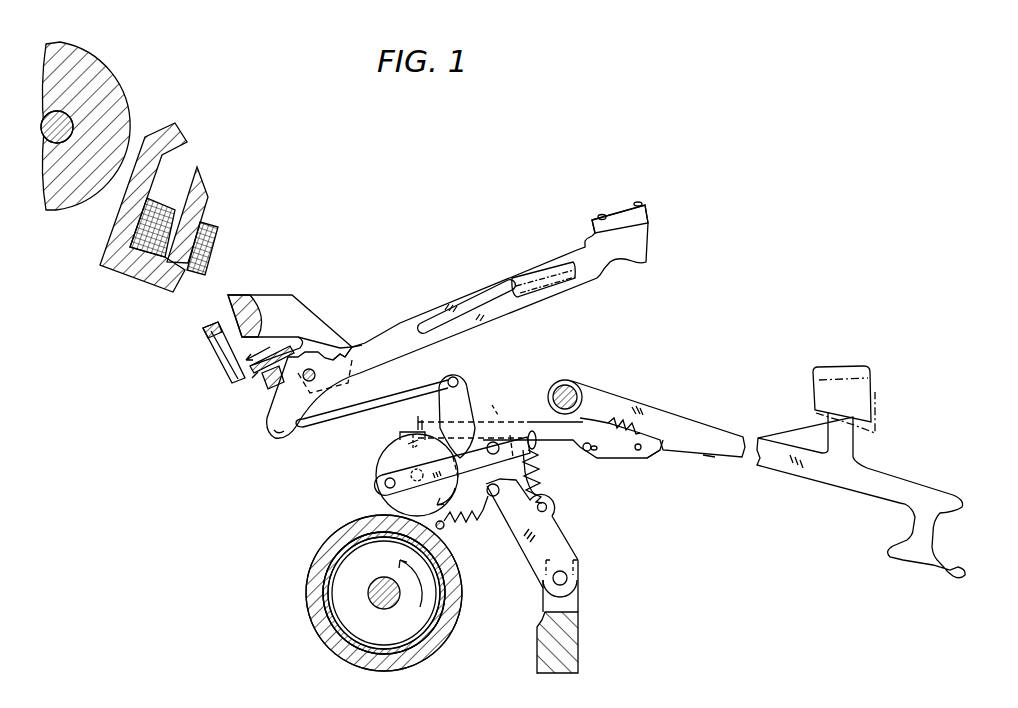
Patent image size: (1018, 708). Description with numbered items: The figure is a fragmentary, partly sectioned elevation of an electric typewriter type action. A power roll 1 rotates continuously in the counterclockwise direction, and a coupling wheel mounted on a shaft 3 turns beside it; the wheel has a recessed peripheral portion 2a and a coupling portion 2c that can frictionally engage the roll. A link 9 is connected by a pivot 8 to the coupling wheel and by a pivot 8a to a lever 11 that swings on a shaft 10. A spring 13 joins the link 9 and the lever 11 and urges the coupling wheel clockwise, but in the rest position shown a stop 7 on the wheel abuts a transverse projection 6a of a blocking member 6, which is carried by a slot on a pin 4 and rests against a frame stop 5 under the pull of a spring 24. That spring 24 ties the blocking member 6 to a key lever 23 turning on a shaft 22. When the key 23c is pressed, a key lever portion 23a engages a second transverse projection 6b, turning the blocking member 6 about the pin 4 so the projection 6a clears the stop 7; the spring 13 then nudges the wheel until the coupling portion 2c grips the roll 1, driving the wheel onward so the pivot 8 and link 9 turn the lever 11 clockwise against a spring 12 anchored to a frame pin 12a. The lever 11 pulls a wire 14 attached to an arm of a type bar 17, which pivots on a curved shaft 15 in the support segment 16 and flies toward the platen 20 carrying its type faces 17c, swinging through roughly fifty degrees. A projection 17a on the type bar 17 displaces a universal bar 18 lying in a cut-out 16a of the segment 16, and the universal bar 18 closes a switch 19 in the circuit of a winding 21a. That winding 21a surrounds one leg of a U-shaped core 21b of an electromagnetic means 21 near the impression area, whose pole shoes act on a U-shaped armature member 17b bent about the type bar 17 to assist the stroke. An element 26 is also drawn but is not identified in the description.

The power roll 1 is at (307, 598).
The recessed peripheral portion 2a is at (455, 450).
The coupling portion 2c is at (490, 480).
The shaft 3 is at (422, 492).
The pin 4 is at (586, 452).
The stop 5 is at (493, 402).
The blocking member 6 is at (530, 422).
The transverse projection 6a is at (418, 418).
The transverse projection 6b is at (663, 452).
The stop 7 is at (395, 440).
The pivot 8 is at (385, 485).
The pivot 8a is at (496, 443).
The link 9 is at (437, 463).
The shaft 10 is at (567, 580).
The lever 11 is at (530, 555).
The spring 12 is at (488, 497).
The pin 12a is at (462, 522).
The spring 13 is at (533, 474).
The wire 14 is at (403, 388).
The curved shaft 15 is at (325, 376).
The support segment 16 is at (242, 295).
The cut-out 16a is at (304, 326).
The type bar 17 is at (467, 300).
The projection 17a is at (336, 355).
The armature member 17b is at (537, 273).
The type faces 17c is at (640, 203).
The universal bar 18 is at (252, 379).
The switch 19 is at (215, 363).
The platen 20 is at (110, 68).
The electromagnetic means 21 is at (167, 128).
The winding 21a is at (218, 230).
The U-shaped core 21b is at (200, 185).
The shaft 22 is at (568, 390).
The key lever 23 is at (703, 428).
The key lever portion 23a is at (703, 458).
The key 23c is at (835, 368).
The spring 24 is at (633, 440).
The disc 26 is at (378, 462).